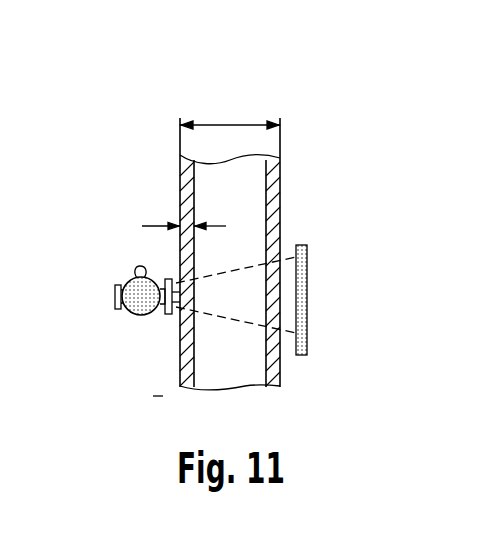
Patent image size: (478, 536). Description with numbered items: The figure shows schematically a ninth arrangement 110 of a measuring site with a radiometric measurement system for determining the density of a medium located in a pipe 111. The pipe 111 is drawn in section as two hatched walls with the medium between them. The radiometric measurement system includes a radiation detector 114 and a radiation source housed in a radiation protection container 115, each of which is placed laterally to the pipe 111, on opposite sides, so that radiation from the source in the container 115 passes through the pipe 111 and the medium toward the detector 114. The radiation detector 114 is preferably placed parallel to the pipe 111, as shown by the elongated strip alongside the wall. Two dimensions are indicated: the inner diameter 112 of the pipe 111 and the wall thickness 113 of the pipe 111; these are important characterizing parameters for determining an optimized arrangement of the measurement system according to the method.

The ninth arrangement 110 is at (347, 165).
The pipe 111 is at (277, 373).
The inner diameter 112 is at (235, 124).
The wall thickness 113 is at (152, 226).
The radiation detector 114 is at (307, 298).
The radiation protection container 115 is at (139, 315).